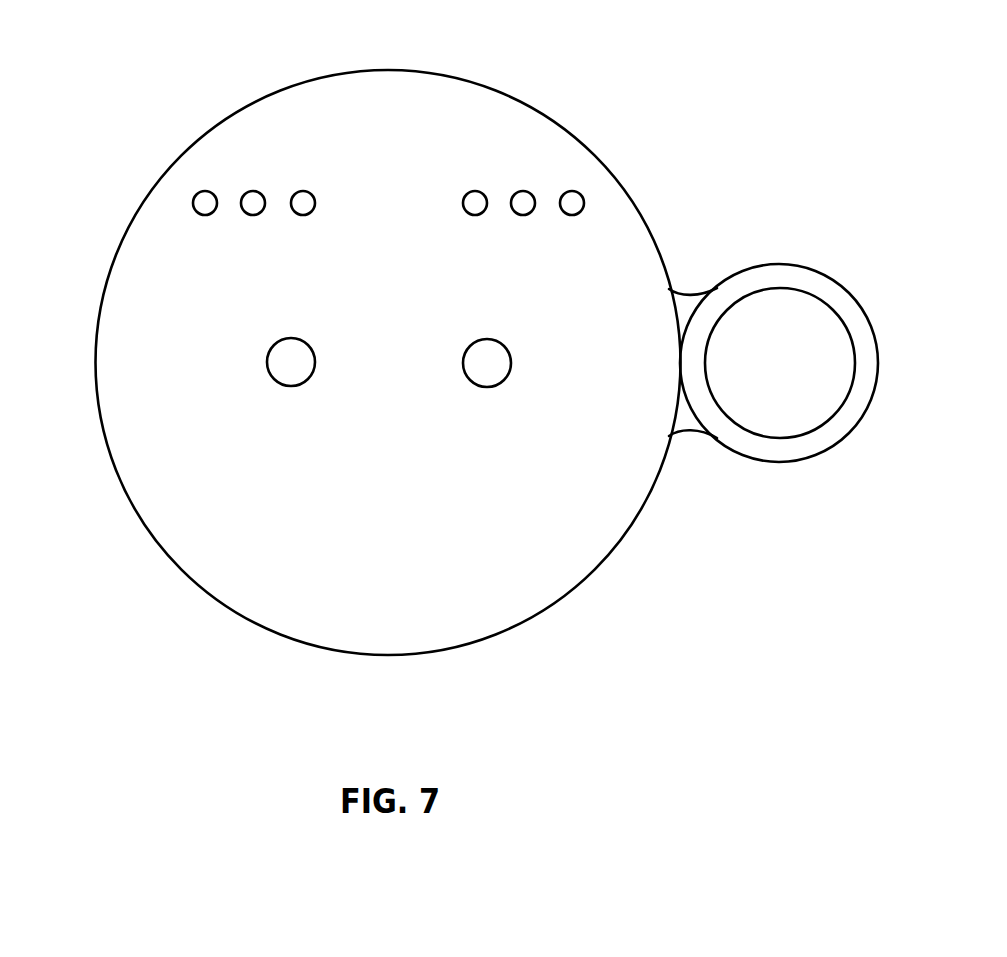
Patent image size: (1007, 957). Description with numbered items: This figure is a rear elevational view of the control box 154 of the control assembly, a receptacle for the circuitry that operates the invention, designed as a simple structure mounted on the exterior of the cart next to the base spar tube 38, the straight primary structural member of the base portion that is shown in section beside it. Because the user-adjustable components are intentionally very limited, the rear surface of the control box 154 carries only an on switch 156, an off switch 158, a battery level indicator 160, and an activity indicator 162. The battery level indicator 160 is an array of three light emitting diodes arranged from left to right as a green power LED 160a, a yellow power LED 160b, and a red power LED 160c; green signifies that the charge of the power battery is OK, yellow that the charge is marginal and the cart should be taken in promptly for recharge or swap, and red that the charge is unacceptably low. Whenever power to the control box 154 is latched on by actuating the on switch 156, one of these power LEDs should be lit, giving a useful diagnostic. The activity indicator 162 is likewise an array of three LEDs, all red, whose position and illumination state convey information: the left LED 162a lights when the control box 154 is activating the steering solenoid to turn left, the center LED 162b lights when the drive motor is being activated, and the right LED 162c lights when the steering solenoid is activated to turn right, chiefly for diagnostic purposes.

The base spar tube 38 is at (797, 377).
The control box 154 is at (413, 498).
The on switch 156 is at (291, 362).
The off switch 158 is at (487, 363).
The battery level indicator 160 is at (573, 168).
The green power LED 160a is at (475, 203).
The yellow power LED 160b is at (523, 203).
The red power LED 160c is at (572, 203).
The activity indicator 162 is at (209, 168).
The left LED 162a is at (205, 203).
The center LED 162b is at (253, 203).
The right LED 162c is at (303, 203).